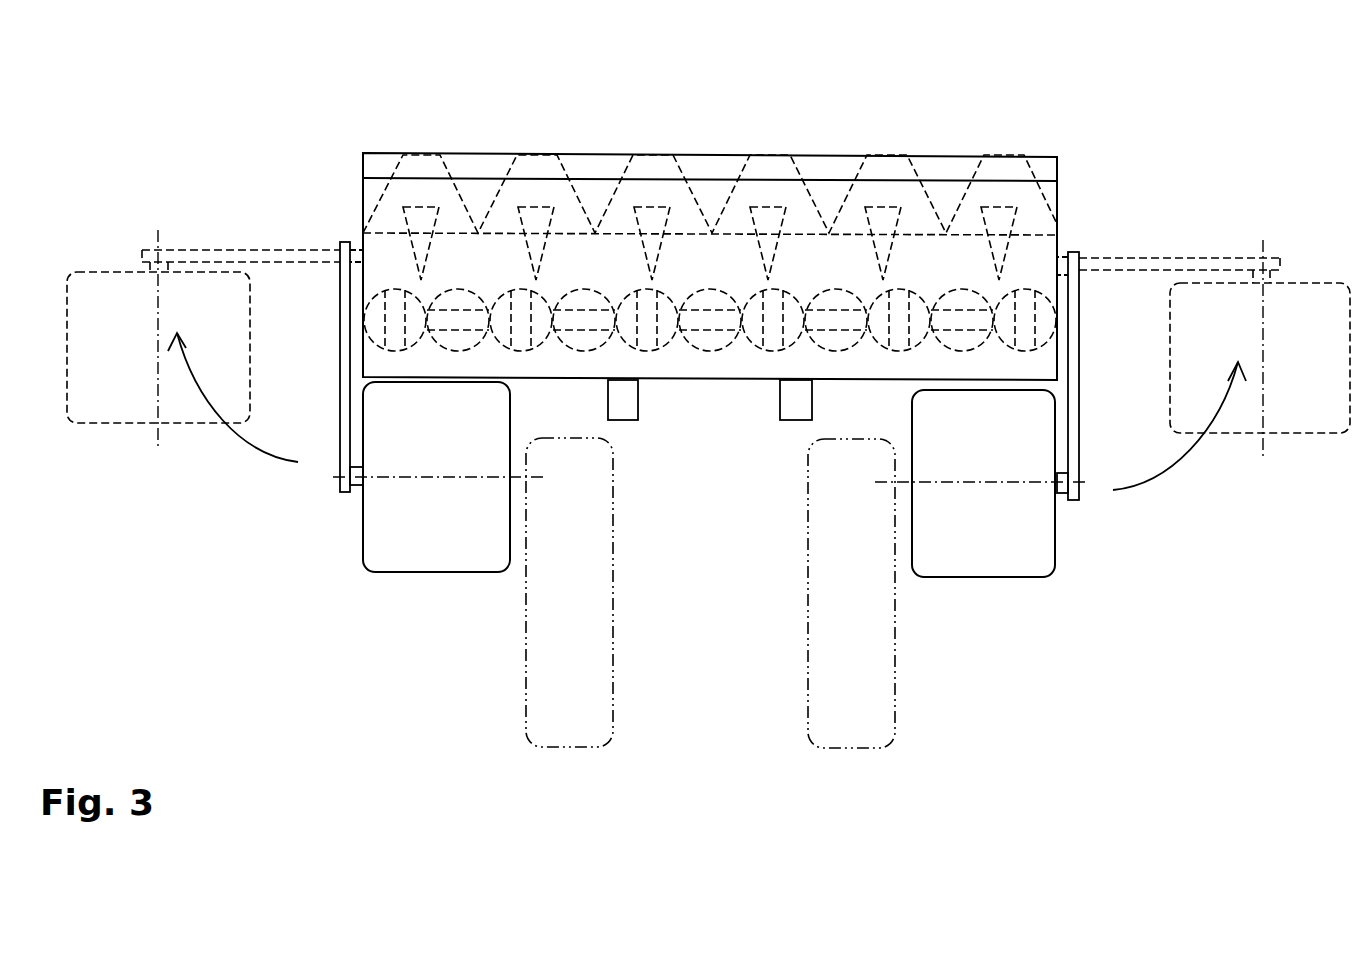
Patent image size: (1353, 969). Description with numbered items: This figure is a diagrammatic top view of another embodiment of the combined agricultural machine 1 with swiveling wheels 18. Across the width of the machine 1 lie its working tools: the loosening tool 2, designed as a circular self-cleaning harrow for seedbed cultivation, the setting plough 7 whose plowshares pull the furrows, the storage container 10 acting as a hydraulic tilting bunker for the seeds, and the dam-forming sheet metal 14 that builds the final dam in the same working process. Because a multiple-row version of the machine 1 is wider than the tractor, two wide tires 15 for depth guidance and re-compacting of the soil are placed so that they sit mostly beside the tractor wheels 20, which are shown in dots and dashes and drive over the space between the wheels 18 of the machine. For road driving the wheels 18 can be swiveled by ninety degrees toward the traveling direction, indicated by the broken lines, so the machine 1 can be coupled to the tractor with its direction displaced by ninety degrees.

The combined agricultural machine 1 is at (708, 399).
The loosening tool 2 is at (393, 312).
The setting plough 7 is at (648, 242).
The storage container 10 is at (1032, 263).
The dam-forming sheet metal 14 is at (573, 170).
The wide tires 15 is at (387, 528).
The swiveling wheels 18 is at (738, 536).
The tractor wheels 20 is at (548, 665).